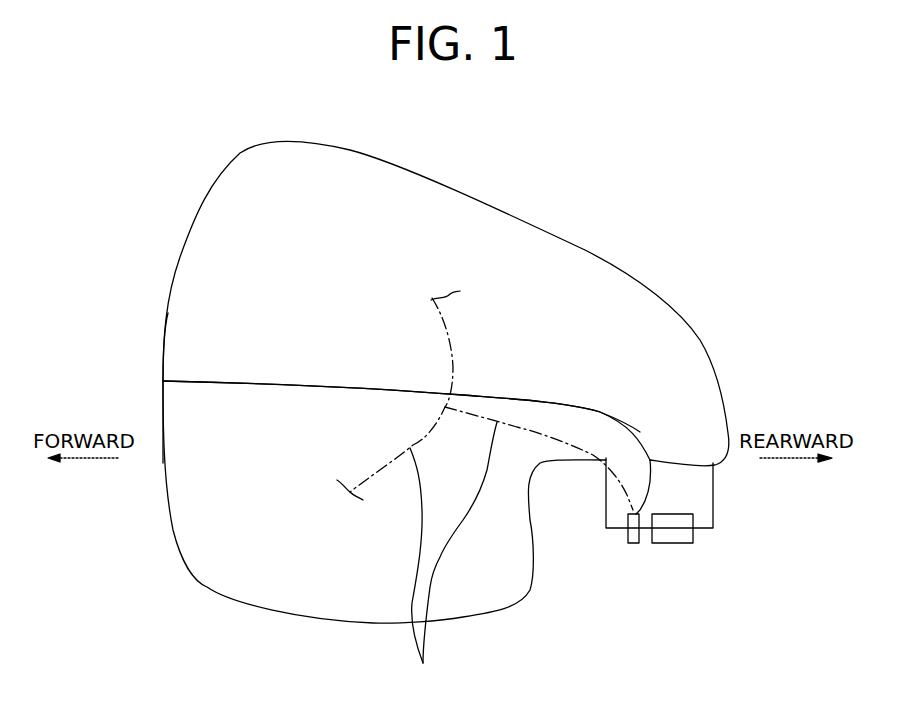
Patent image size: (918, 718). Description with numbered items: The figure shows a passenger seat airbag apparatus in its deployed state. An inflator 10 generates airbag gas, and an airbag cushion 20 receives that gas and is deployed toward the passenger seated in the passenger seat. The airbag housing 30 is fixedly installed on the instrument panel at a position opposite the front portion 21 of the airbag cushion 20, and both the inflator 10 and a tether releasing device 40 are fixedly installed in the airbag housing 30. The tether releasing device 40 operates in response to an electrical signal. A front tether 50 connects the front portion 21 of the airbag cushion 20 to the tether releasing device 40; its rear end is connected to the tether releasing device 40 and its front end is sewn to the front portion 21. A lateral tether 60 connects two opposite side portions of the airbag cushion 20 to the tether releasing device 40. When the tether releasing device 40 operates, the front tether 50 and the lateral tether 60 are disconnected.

The inflator 10 is at (677, 544).
The airbag cushion 20 is at (470, 191).
The front portion 21 is at (163, 333).
The airbag housing 30 is at (713, 522).
The tether releasing device 40 is at (630, 544).
The front tether 50 is at (292, 380).
The lateral tether 60 is at (452, 557).